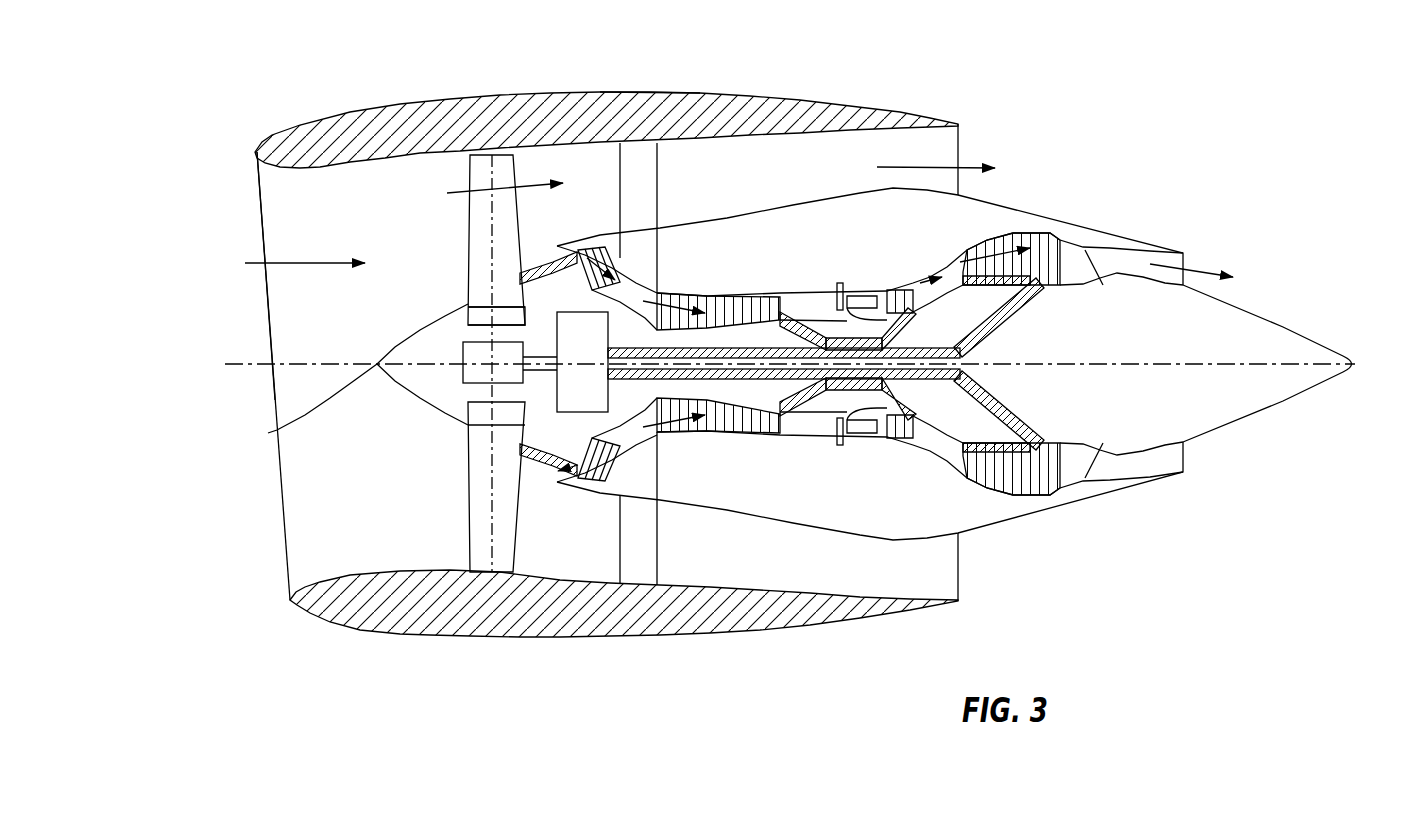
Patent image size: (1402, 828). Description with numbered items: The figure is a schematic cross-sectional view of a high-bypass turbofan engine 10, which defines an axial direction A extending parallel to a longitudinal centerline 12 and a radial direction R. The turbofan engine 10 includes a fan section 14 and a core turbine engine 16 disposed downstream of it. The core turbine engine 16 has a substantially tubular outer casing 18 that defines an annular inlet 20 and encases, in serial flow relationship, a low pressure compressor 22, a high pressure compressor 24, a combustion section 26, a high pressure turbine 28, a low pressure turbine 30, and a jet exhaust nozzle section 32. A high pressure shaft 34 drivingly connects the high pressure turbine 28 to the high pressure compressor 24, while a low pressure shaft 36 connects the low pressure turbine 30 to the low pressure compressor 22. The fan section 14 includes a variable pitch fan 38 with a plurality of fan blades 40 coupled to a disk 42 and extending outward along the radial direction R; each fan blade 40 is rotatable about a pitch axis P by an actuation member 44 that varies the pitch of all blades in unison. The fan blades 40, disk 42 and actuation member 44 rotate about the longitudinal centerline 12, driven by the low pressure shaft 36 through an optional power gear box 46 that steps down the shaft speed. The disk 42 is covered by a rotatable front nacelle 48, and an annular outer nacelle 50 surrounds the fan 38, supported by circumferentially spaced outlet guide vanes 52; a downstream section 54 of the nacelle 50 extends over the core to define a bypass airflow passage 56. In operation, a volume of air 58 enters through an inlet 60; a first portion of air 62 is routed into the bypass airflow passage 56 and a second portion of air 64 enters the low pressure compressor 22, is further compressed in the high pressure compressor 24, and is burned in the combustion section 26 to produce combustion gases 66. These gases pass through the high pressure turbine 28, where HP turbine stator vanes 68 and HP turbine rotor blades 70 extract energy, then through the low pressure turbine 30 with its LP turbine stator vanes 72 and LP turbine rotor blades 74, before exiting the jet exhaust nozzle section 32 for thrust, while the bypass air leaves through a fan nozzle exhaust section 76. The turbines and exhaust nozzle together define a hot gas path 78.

The turbofan engine 10 is at (1105, 100).
The longitudinal centerline 12 is at (1123, 360).
The fan section 14 is at (425, 180).
The core turbine engine 16 is at (777, 250).
The outer casing 18 is at (815, 526).
The annular inlet 20 is at (570, 468).
The low pressure compressor 22 is at (630, 425).
The high pressure compressor 24 is at (687, 415).
The combustion section 26 is at (858, 427).
The high pressure turbine 28 is at (993, 423).
The low pressure turbine 30 is at (1040, 490).
The jet exhaust nozzle section 32 is at (1103, 473).
The high pressure shaft 34 is at (880, 334).
The low pressure shaft 36 is at (1007, 323).
The variable pitch fan 38 is at (433, 414).
The fan blades 40 is at (463, 513).
The disk 42 is at (483, 317).
The actuation member 44 is at (463, 345).
The power gear box 46 is at (592, 328).
The front nacelle 48 is at (277, 430).
The outer nacelle 50 is at (513, 635).
The outlet guide vanes 52 is at (658, 175).
The downstream section 54 is at (905, 115).
The bypass airflow passage 56 is at (805, 184).
The volume of air 58 is at (306, 262).
The inlet 60 is at (287, 580).
The first portion of air 62 is at (487, 192).
The second portion of air 64 is at (550, 257).
The combustion gases 66 is at (900, 290).
The HP turbine stator vanes 68 is at (873, 437).
The HP turbine rotor blades 70 is at (970, 393).
The LP turbine stator vanes 72 is at (962, 488).
The LP turbine rotor blades 74 is at (978, 490).
The fan nozzle exhaust section 76 is at (960, 150).
The hot gas path 78 is at (938, 268).
The pitch axis P is at (515, 165).
The radial direction R is at (180, 222).
The axial direction A is at (560, 697).